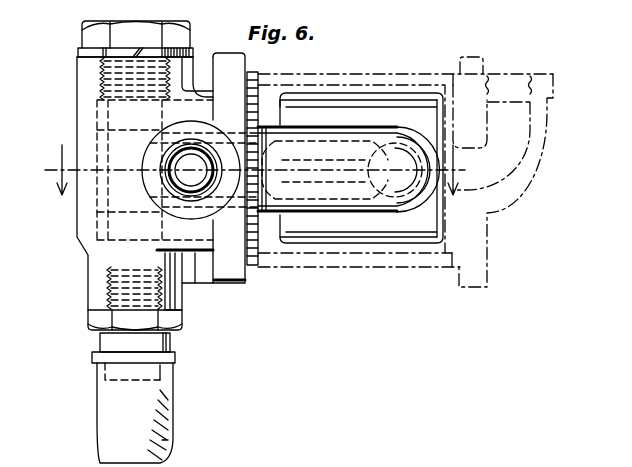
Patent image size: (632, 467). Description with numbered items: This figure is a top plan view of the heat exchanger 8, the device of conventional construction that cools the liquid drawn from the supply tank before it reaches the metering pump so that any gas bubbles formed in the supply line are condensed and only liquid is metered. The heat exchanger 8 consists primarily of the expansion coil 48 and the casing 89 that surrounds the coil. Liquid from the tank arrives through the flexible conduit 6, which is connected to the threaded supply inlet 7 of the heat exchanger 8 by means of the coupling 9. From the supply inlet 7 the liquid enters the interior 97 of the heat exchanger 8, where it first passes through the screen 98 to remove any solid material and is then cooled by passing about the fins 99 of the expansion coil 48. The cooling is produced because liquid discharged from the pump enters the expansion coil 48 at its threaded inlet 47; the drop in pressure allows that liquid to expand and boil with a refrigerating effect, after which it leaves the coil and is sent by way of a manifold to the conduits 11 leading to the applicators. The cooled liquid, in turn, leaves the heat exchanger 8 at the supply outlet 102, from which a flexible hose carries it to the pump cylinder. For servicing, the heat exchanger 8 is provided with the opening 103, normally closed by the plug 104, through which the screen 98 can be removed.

The plug 104 is at (125, 45).
The opening 103 is at (100, 72).
The heat exchanger 8 is at (69, 89).
The interior 97 is at (100, 132).
The threaded inlet 47 is at (172, 152).
The conduits 11 is at (264, 170).
The screen 98 is at (107, 212).
The threaded supply inlet 7 is at (108, 287).
The coupling 9 is at (175, 320).
The flexible conduit 6 is at (150, 416).
The casing 89 is at (327, 258).
The expansion coil 48 is at (383, 200).
The fins 99 is at (357, 108).
The supply outlet 102 is at (555, 55).